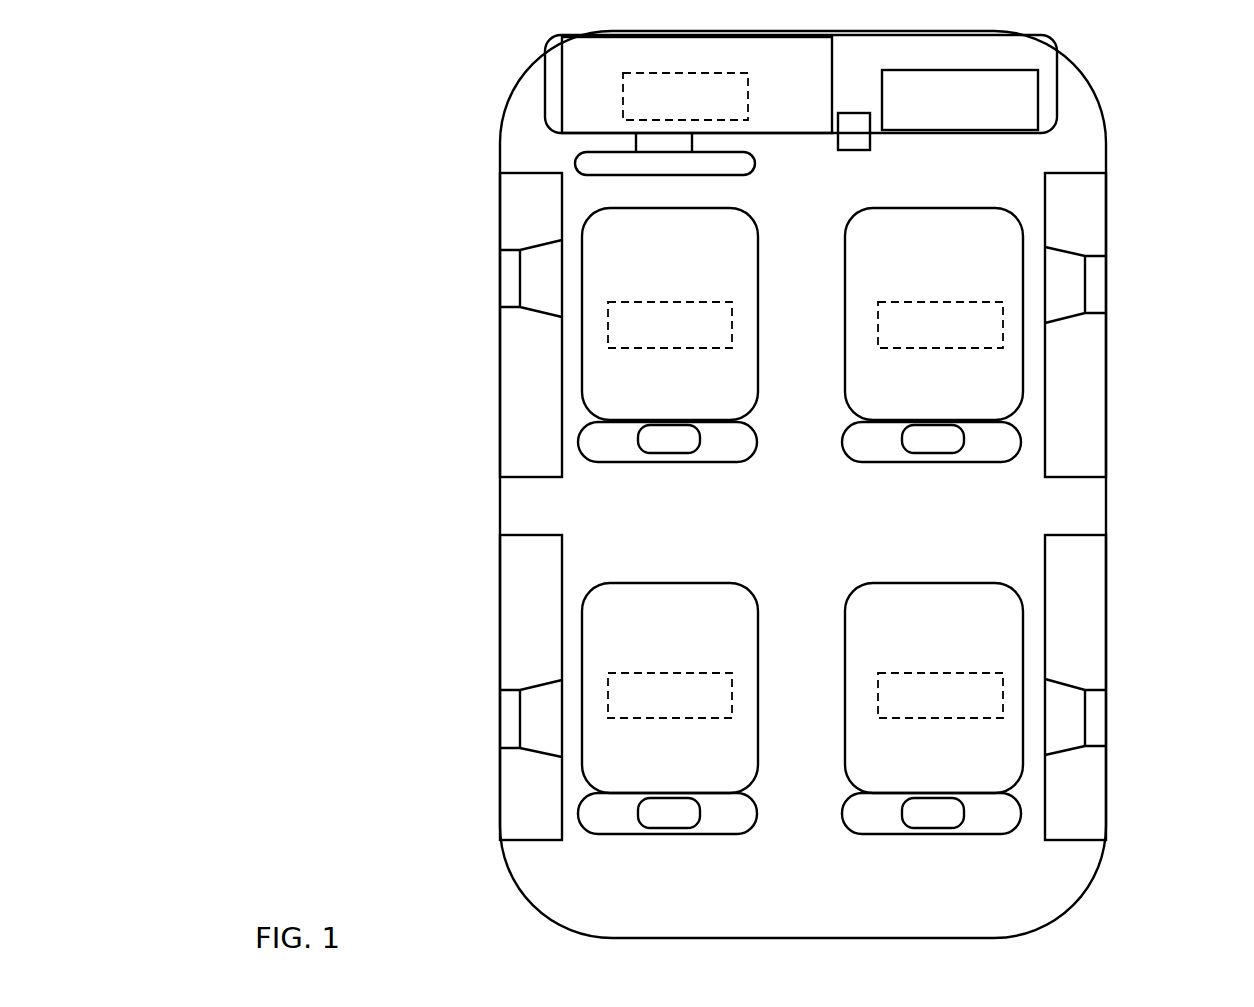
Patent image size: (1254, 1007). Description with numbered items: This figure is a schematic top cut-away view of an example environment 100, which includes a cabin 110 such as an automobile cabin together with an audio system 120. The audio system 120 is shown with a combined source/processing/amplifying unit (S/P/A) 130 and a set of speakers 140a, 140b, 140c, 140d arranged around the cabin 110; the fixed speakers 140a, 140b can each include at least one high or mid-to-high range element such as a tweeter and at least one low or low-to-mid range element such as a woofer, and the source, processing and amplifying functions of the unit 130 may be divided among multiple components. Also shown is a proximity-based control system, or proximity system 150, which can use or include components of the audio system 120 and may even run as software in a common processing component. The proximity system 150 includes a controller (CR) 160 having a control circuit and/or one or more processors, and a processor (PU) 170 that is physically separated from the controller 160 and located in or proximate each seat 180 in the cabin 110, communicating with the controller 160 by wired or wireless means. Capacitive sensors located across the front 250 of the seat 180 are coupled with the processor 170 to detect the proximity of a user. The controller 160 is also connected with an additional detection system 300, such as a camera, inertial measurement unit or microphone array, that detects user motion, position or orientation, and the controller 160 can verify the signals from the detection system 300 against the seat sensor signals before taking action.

The environment 100 is at (362, 125).
The cabin 110 is at (805, 546).
The audio system 120 is at (1103, 90).
The combined source/processing/amplifying unit 130 is at (1022, 112).
The speaker 140a is at (537, 305).
The speaker 140b is at (1066, 310).
The speaker 140c is at (538, 695).
The speaker 140d is at (1066, 693).
The proximity system 150 is at (820, 69).
The controller 160 is at (728, 112).
The processor 170 is at (984, 712).
The seat 180 is at (810, 534).
The front of the seat 250 is at (727, 385).
The additional detection system 300 is at (854, 108).